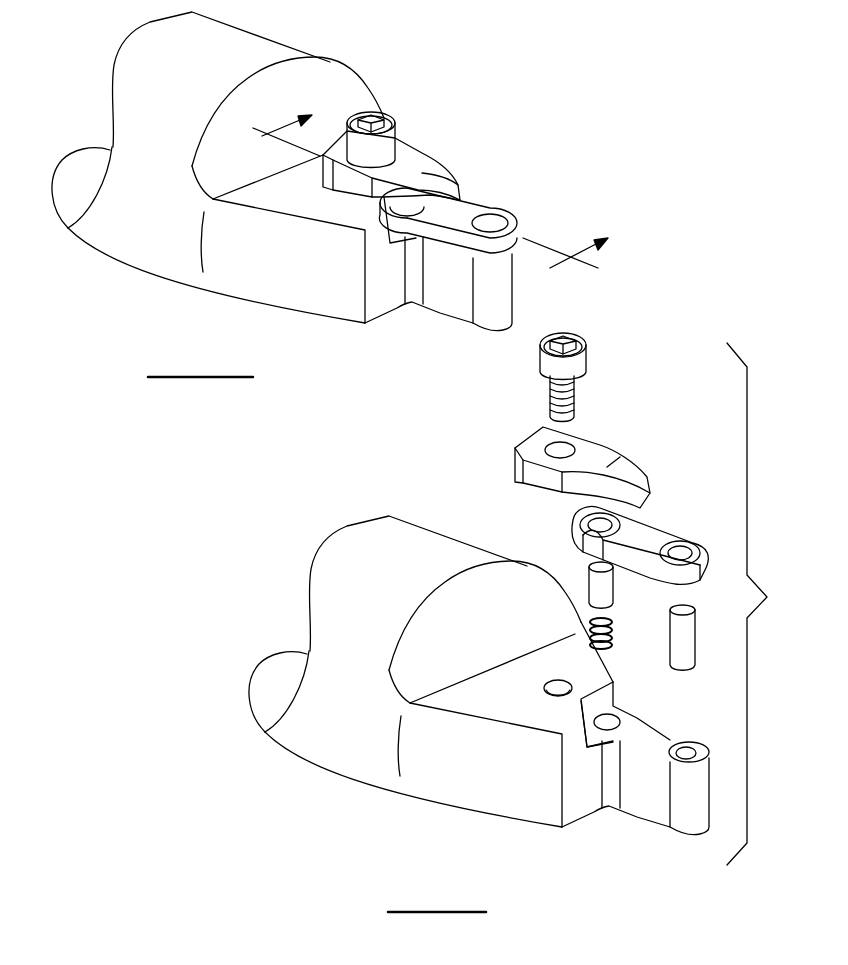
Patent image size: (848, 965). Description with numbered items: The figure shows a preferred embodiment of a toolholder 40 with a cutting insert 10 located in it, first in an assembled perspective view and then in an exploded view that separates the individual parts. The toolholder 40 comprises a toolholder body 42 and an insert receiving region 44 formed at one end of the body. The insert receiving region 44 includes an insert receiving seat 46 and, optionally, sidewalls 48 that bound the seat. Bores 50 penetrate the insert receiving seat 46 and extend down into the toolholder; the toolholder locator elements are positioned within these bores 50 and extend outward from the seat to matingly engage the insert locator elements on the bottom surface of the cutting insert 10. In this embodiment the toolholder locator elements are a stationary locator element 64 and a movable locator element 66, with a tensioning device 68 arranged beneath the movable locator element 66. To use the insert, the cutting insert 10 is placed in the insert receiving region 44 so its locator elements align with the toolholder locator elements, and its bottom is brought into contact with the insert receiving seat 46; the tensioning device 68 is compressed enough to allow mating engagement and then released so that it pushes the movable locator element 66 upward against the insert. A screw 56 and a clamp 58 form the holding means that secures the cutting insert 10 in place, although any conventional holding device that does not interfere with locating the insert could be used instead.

In FIG. 4, the cutting insert 10 is at (672, 518).
In FIG. 3, the toolholder 40 is at (78, 121).
In FIG. 4, the toolholder 40 is at (255, 637).
In FIG. 3, the toolholder body 42 is at (196, 100).
In FIG. 4, the toolholder body 42 is at (380, 593).
In FIG. 3, the insert receiving region 44 is at (485, 186).
In FIG. 4, the insert receiving region 44 is at (653, 708).
In FIG. 4, the insert receiving seat 46 is at (662, 741).
In FIG. 4, the sidewalls 48 is at (588, 697).
In FIG. 4, the bores 50 is at (694, 750).
In FIG. 3, the screw 56 is at (396, 118).
In FIG. 4, the screw 56 is at (580, 335).
In FIG. 3, the clamp 58 is at (432, 152).
In FIG. 4, the clamp 58 is at (598, 442).
In FIG. 4, the stationary locator element 64 is at (696, 654).
In FIG. 4, the movable locator element 66 is at (612, 593).
In FIG. 4, the tensioning device 68 is at (613, 638).